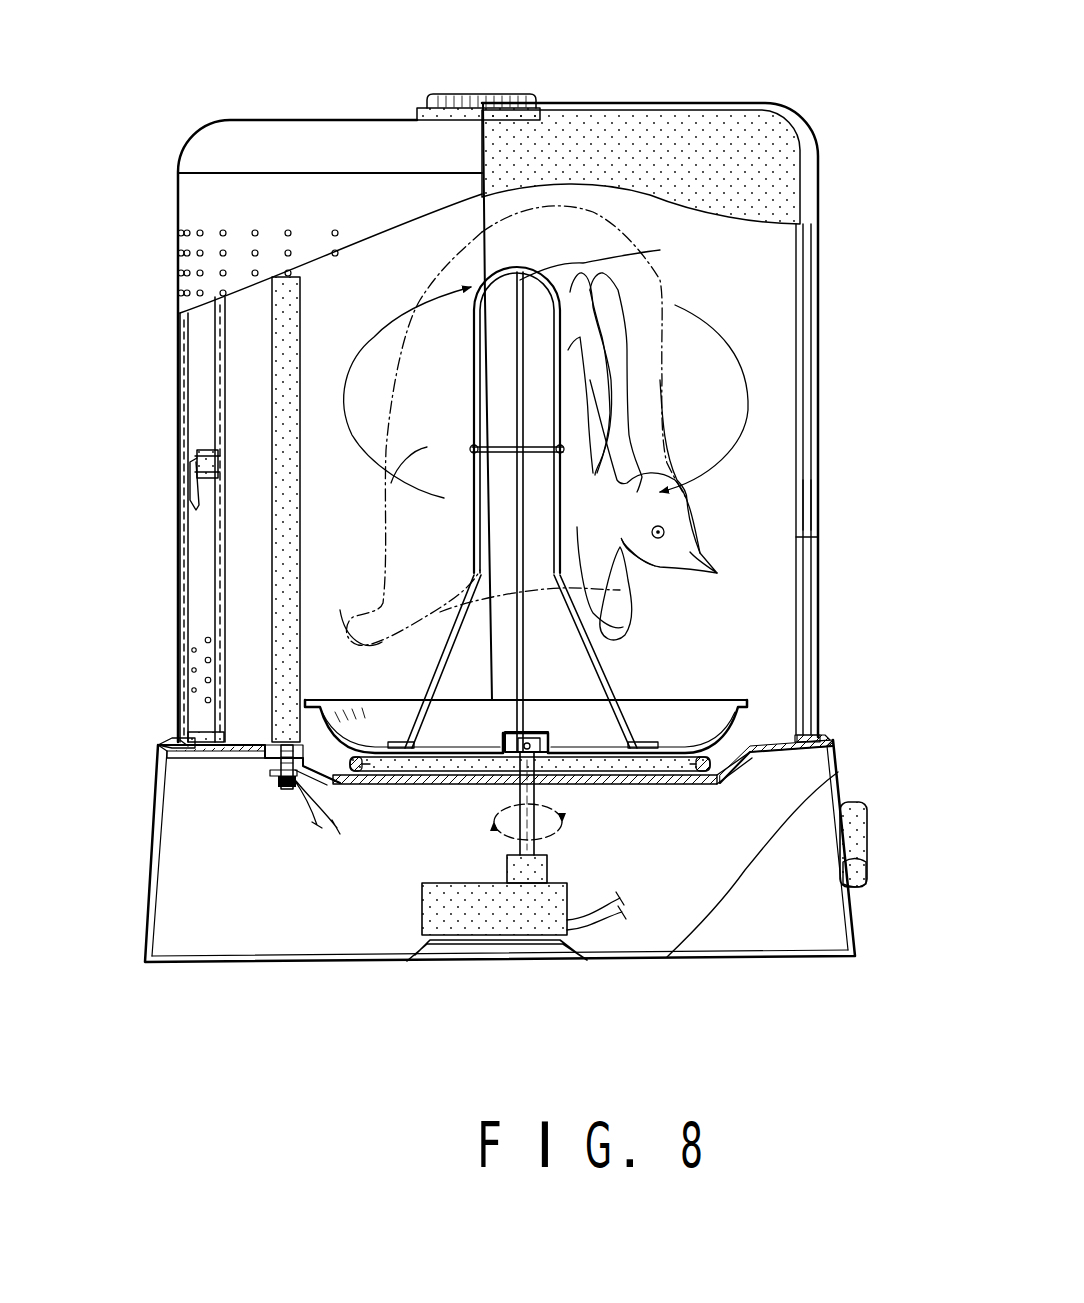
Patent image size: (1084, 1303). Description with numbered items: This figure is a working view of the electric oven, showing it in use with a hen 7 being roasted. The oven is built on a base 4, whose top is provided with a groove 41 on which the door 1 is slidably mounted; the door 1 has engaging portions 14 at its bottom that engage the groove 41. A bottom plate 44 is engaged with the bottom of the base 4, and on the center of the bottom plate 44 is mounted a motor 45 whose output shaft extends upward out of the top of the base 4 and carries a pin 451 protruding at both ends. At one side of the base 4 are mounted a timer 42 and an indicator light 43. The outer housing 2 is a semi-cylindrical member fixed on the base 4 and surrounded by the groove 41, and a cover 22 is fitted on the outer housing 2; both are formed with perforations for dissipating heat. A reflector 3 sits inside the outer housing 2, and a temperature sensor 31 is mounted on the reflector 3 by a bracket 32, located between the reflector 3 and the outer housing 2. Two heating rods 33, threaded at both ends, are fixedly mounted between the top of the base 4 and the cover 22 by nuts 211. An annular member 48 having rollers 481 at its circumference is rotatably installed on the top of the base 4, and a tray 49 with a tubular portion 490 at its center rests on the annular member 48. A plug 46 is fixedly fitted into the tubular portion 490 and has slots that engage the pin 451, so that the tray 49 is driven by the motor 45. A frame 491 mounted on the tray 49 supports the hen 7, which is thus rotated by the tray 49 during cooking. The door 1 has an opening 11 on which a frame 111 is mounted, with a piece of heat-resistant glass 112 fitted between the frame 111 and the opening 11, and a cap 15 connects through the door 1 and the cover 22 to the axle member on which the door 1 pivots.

The door 1 is at (815, 152).
The cover 22 is at (338, 137).
The cap 15 is at (514, 106).
The opening 11 is at (819, 418).
The heat-resistant glass 112 is at (811, 505).
The frame 111 is at (806, 540).
The reflector 3 is at (215, 358).
The bracket 32 is at (207, 450).
The temperature sensor 31 is at (198, 460).
The outer housing 2 is at (187, 547).
The heating rods 33 is at (285, 638).
The hen 7 is at (655, 292).
The frame 491 is at (660, 250).
The tray 49 is at (693, 745).
The tubular portion 490 is at (533, 717).
The annular member 48 is at (722, 775).
The plug 46 is at (547, 772).
The base 4 is at (152, 877).
The bottom plate 44 is at (353, 962).
The groove 41 is at (182, 740).
The engaging portions 14 is at (820, 736).
The nuts 211 is at (272, 776).
The rollers 481 is at (335, 784).
The pin 451 is at (503, 772).
The motor 45 is at (496, 922).
The timer 42 is at (848, 836).
The indicator light 43 is at (867, 870).